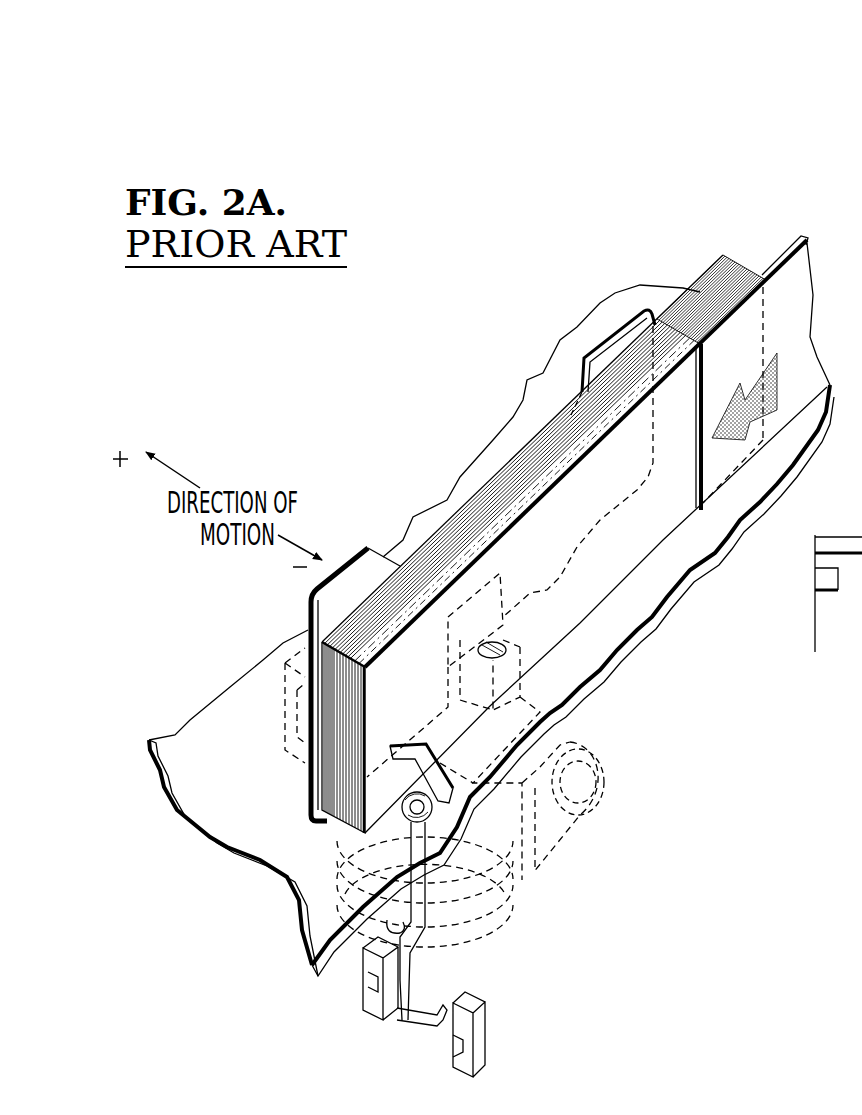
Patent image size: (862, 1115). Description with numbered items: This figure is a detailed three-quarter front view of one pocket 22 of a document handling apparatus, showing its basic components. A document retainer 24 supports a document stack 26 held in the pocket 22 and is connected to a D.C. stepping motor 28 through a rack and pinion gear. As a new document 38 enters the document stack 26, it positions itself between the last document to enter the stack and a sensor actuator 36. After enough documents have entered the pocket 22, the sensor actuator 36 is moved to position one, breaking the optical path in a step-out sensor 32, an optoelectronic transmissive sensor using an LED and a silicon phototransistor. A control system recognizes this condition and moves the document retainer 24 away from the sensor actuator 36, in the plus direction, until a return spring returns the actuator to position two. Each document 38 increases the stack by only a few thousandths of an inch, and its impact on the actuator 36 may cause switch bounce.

The pocket 22 is at (627, 897).
The document retainer 24 is at (605, 322).
The document stack 26 is at (716, 280).
The D.C. stepping motor 28 is at (353, 880).
The step-out sensor 32 is at (832, 580).
The sensor actuator 36 is at (418, 954).
The document 38 is at (780, 280).